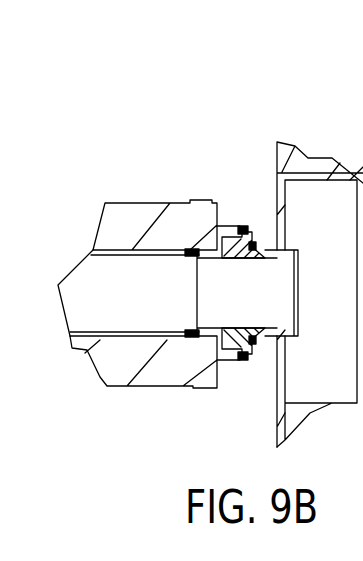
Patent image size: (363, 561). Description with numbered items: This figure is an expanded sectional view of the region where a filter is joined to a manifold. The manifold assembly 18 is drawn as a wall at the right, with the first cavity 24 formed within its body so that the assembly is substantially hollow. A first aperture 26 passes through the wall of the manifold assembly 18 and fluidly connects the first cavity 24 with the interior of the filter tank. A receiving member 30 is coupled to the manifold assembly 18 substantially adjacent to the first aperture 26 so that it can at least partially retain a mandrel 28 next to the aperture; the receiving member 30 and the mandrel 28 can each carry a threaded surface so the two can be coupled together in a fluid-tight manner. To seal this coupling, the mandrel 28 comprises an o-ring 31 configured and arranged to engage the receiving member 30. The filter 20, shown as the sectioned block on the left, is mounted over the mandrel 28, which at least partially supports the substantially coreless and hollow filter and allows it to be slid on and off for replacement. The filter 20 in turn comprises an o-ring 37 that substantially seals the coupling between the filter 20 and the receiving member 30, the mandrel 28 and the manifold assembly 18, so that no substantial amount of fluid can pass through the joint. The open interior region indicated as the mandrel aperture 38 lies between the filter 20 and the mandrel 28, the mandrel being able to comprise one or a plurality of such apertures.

The manifold assembly 18 is at (303, 155).
The filter 20 is at (140, 218).
The first cavity 24 is at (313, 367).
The first aperture 26 is at (283, 288).
The mandrel 28 is at (70, 334).
The receiving member 30 is at (267, 240).
The o-ring 31 is at (253, 341).
The o-ring 37 is at (243, 226).
The mandrel aperture 38 is at (103, 287).